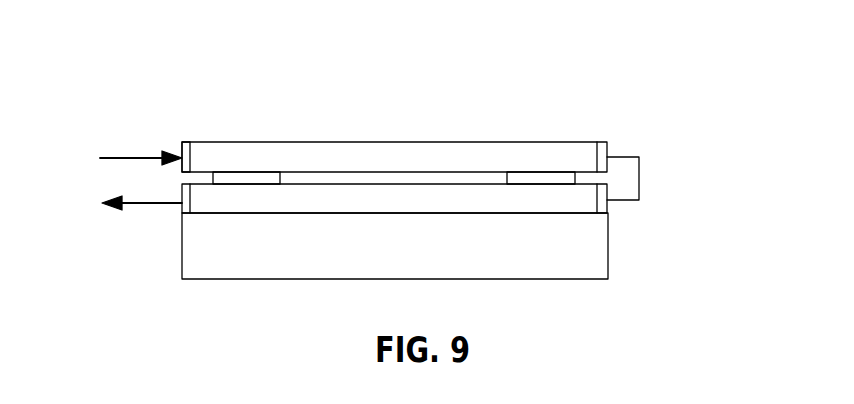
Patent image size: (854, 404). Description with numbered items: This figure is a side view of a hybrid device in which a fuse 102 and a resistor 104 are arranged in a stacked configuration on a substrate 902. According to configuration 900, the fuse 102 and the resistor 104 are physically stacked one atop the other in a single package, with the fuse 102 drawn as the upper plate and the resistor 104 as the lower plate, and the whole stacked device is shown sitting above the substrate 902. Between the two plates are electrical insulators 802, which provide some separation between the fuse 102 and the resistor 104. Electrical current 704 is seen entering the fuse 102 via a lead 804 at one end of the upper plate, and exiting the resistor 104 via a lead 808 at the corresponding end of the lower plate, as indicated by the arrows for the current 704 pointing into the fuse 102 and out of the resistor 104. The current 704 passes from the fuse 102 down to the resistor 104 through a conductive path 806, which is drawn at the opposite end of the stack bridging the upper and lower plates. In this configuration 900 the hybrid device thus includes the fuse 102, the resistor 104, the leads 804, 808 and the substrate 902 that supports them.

The configuration 900 is at (705, 65).
The fuse 102 is at (462, 142).
The resistor 104 is at (385, 184).
The electrical insulators 802 is at (270, 170).
The lead 804 is at (185, 141).
The conductive path 806 is at (639, 178).
The lead 808 is at (182, 186).
The electrical current 704 is at (141, 181).
The substrate 902 is at (608, 250).